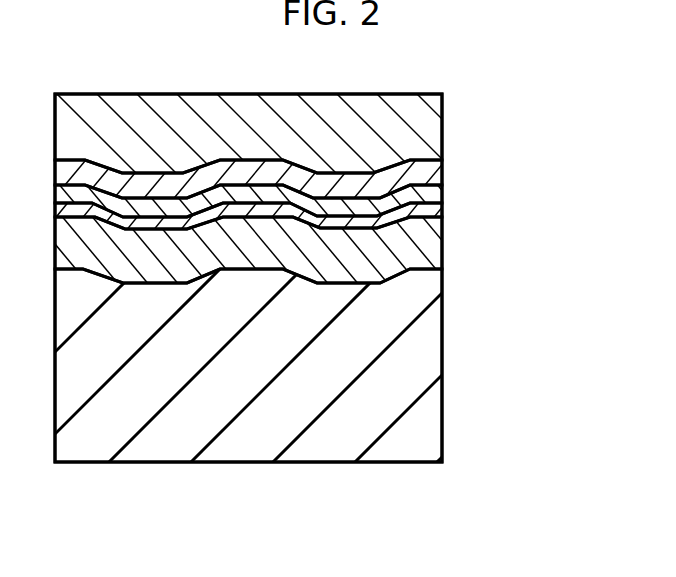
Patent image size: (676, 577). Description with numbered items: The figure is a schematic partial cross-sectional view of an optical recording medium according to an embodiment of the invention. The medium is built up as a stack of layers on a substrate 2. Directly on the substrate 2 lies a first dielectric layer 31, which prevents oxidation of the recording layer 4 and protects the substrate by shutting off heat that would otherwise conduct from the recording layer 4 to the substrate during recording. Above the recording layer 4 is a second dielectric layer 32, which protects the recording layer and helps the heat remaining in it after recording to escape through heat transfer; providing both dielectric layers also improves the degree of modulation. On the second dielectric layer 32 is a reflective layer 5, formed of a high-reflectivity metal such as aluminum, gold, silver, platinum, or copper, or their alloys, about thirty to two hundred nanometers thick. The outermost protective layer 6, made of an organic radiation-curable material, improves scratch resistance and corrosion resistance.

The substrate 2 is at (438, 337).
The first dielectric layer 31 is at (445, 250).
The recording layer 4 is at (445, 212).
The second dielectric layer 32 is at (443, 195).
The reflective layer 5 is at (443, 168).
The protective layer 6 is at (443, 123).